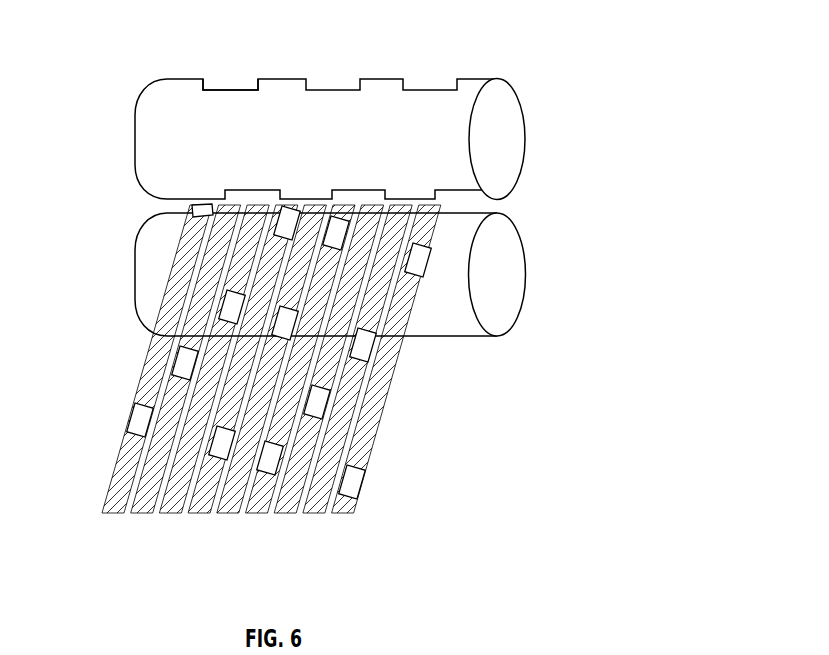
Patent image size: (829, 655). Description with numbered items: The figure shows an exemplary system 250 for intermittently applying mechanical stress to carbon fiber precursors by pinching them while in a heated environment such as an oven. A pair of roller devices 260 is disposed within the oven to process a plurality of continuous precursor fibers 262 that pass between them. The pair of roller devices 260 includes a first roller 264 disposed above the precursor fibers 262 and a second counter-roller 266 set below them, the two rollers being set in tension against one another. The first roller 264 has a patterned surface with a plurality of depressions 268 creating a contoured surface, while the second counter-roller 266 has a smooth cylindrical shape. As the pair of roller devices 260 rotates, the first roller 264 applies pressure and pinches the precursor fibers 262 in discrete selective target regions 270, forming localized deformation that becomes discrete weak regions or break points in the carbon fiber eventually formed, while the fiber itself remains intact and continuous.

The system 250 is at (103, 72).
The pair of roller devices 260 is at (502, 283).
The continuous precursor fibers 262 is at (145, 513).
The first roller 264 is at (135, 158).
The second counter-roller 266 is at (135, 268).
The depressions 268 is at (228, 90).
The discrete selective target regions 270 is at (317, 401).